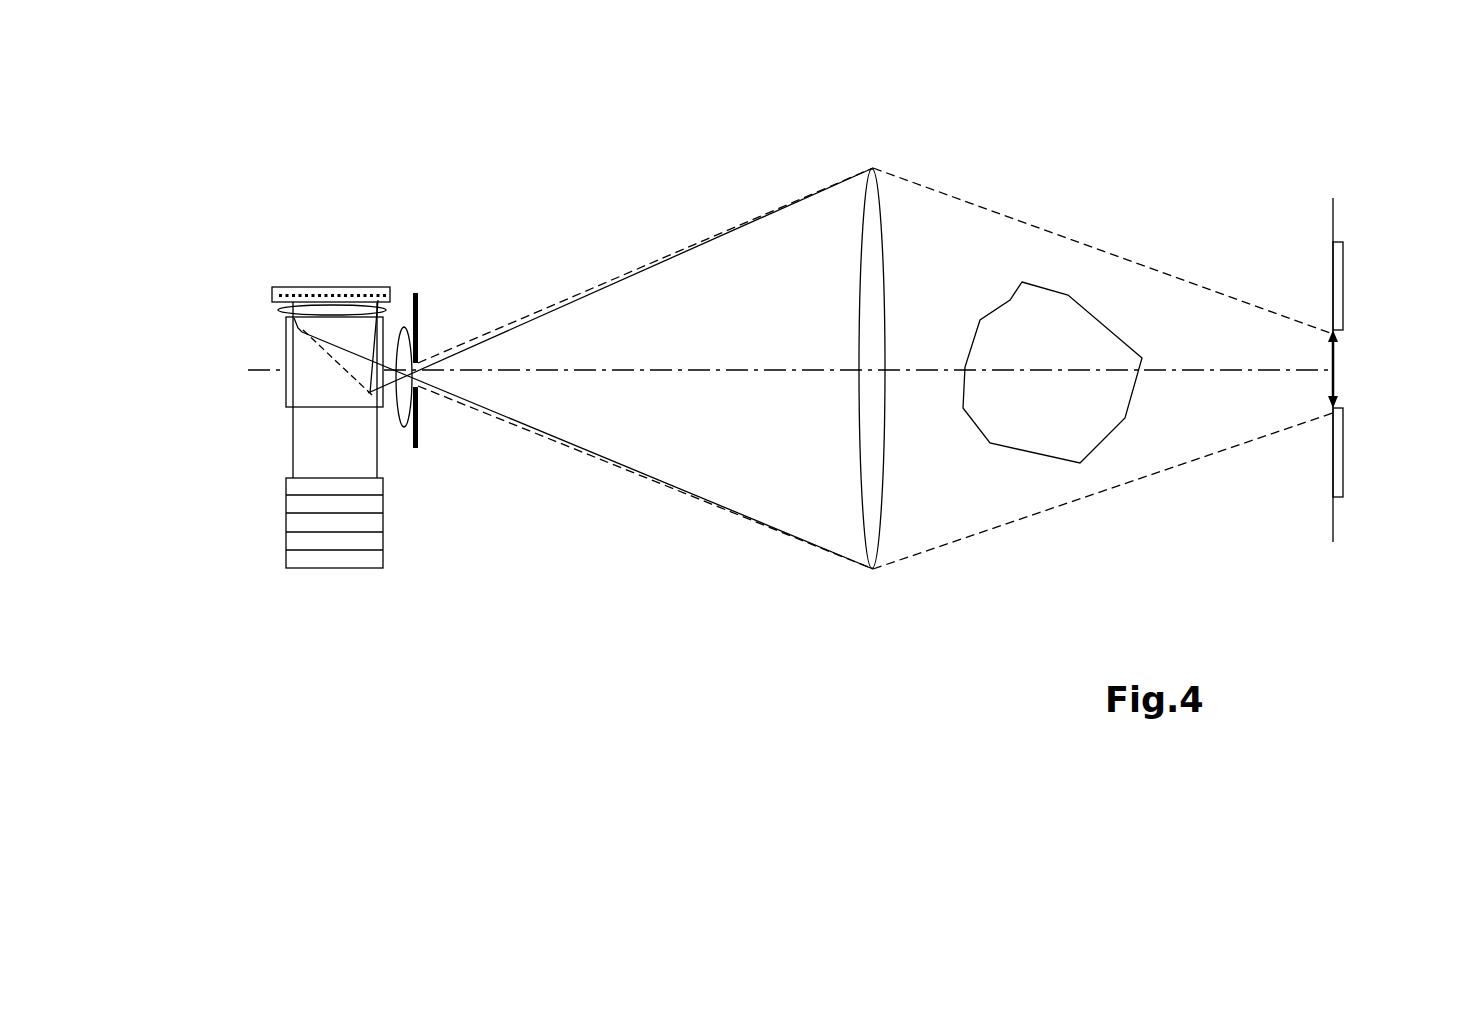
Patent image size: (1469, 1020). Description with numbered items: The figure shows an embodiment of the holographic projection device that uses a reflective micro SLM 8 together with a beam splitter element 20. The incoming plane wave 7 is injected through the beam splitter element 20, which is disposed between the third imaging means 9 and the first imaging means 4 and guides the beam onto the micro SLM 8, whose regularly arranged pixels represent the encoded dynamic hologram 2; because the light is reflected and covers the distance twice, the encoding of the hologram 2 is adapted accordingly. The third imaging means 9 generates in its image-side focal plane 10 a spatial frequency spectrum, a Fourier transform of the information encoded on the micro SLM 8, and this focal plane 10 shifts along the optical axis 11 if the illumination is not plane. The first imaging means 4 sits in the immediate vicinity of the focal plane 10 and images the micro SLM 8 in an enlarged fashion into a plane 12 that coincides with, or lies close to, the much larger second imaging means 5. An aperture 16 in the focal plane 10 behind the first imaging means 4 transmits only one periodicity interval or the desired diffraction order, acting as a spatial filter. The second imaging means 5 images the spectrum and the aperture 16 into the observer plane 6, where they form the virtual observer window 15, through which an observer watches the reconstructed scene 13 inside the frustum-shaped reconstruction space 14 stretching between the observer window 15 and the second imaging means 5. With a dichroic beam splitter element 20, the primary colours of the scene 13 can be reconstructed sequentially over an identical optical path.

The hologram 2 is at (355, 295).
The first imaging means 4 is at (403, 408).
The second imaging means 5 is at (873, 317).
The observer plane 6 is at (1331, 388).
The plane wave 7 is at (276, 556).
The micro SLM 8 is at (270, 302).
The third imaging means 9 is at (332, 313).
The focal plane 10 is at (412, 282).
The optical axis 11 is at (257, 368).
The plane 12 is at (870, 158).
The scene 13 is at (1012, 330).
The reconstruction space 14 is at (1157, 308).
The observer window 15 is at (1350, 359).
The aperture 16 is at (420, 417).
The beam splitter element 20 is at (299, 387).